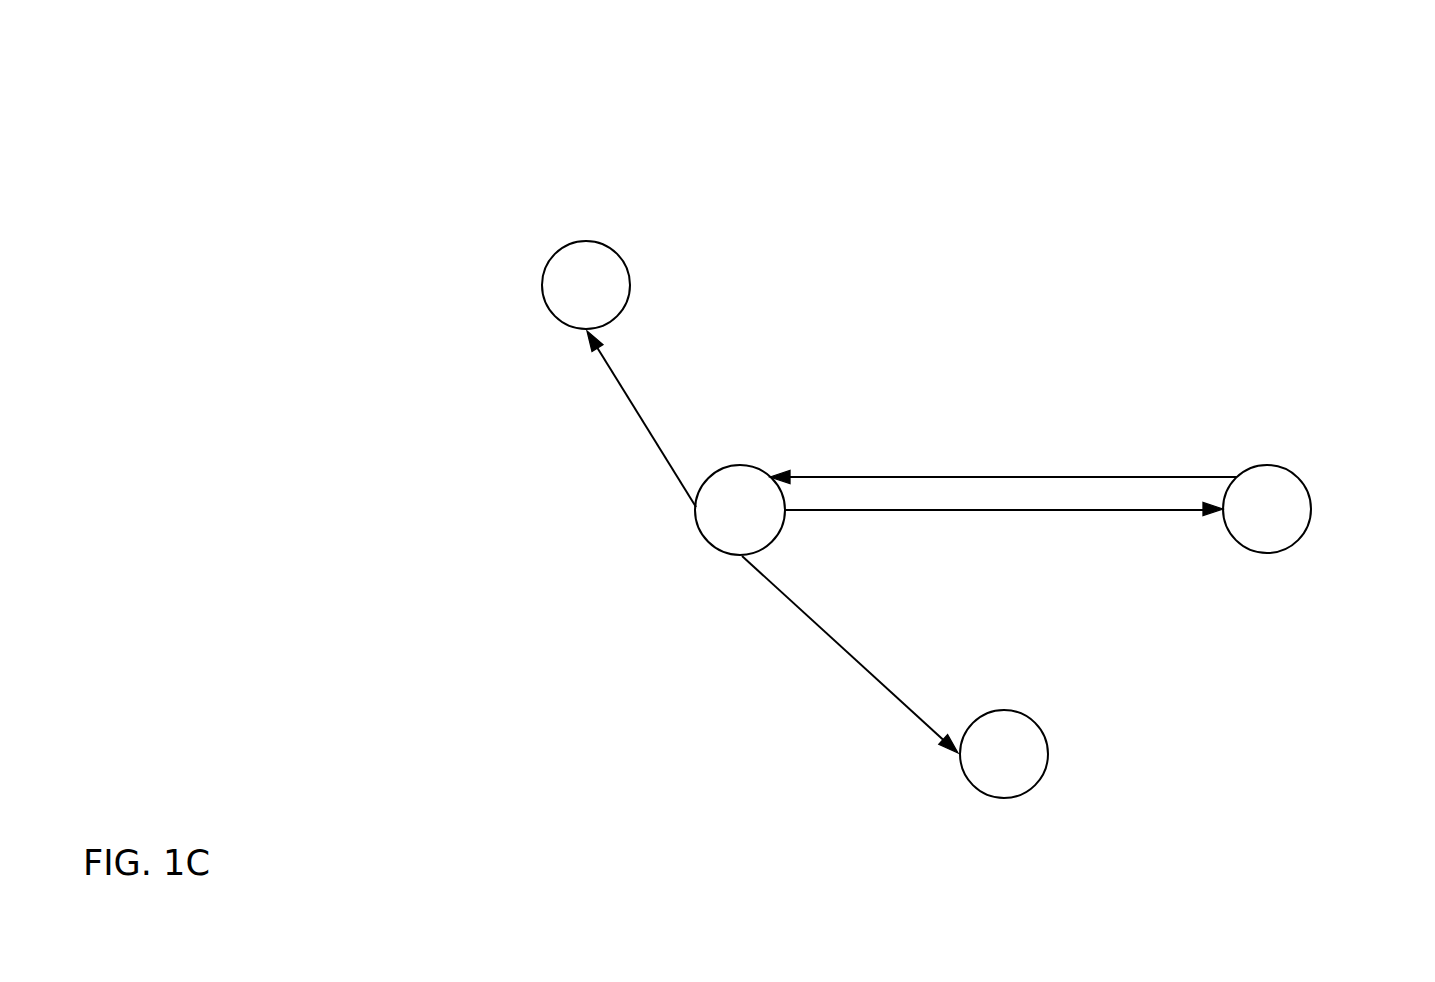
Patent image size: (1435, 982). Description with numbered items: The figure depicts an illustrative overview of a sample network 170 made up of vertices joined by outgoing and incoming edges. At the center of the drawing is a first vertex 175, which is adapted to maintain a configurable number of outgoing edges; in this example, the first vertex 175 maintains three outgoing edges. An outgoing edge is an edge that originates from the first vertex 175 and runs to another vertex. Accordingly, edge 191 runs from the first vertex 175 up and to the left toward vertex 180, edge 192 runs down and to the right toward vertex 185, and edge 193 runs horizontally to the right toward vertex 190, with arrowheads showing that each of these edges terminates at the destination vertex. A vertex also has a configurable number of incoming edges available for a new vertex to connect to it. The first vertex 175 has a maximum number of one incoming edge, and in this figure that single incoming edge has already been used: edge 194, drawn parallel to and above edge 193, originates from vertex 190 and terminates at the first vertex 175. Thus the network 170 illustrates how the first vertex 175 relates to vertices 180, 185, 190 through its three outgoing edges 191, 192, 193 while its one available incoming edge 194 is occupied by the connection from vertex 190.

The network 170 is at (377, 52).
The first vertex 175 is at (758, 465).
The vertex 180 is at (542, 287).
The vertex 185 is at (1048, 755).
The vertex 190 is at (1311, 508).
The outgoing edge 191 is at (595, 445).
The outgoing edge 192 is at (832, 680).
The outgoing edge 193 is at (1068, 578).
The incoming edge 194 is at (1068, 438).